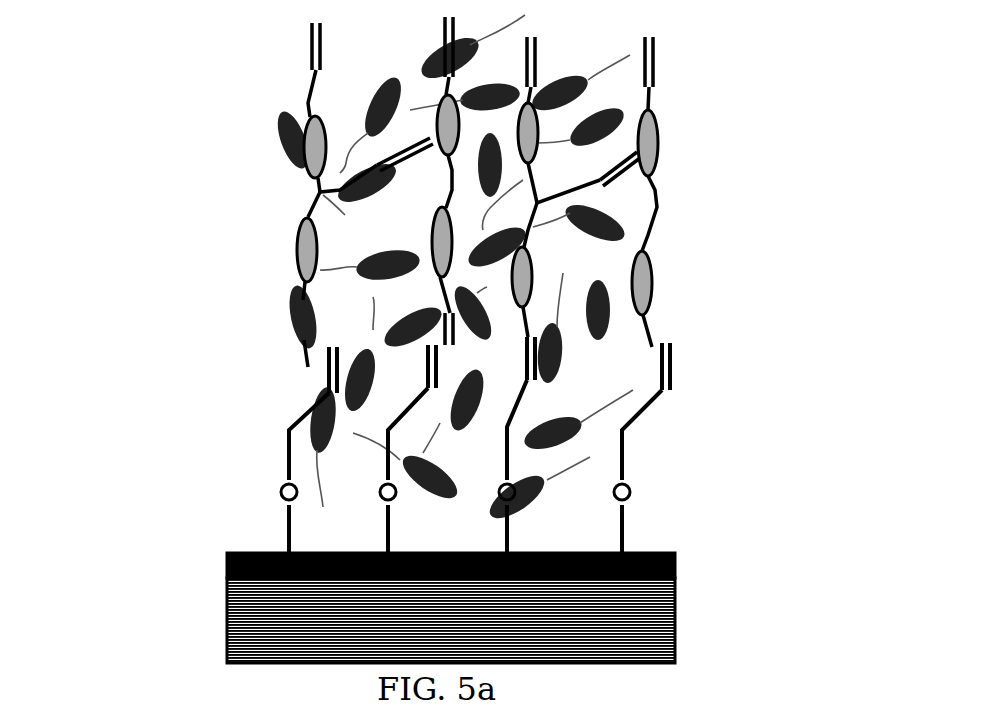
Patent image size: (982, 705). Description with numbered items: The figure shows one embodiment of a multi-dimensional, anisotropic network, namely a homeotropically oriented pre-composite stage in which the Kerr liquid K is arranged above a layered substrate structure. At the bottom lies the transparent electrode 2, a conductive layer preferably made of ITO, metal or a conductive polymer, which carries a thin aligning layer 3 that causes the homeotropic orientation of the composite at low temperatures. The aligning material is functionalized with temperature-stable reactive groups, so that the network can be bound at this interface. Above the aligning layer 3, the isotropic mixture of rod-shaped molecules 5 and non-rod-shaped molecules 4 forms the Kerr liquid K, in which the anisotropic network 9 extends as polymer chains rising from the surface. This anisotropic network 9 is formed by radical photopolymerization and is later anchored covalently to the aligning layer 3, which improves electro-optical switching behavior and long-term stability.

The Kerr liquid K is at (225, 160).
The transparent electrode 2 is at (277, 602).
The aligning layer 3 is at (675, 567).
The non-rod-shaped molecules 4 is at (317, 400).
The rod-shaped molecules 5 is at (643, 133).
The anisotropic network 9 is at (655, 205).